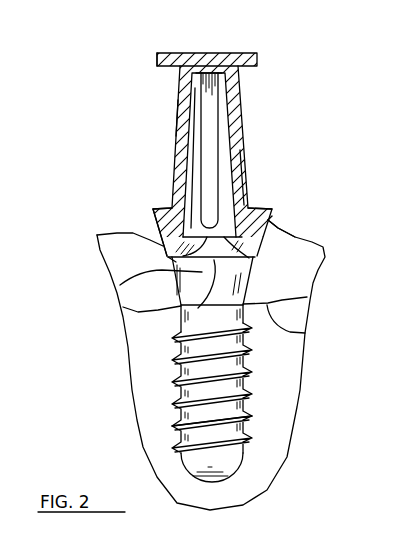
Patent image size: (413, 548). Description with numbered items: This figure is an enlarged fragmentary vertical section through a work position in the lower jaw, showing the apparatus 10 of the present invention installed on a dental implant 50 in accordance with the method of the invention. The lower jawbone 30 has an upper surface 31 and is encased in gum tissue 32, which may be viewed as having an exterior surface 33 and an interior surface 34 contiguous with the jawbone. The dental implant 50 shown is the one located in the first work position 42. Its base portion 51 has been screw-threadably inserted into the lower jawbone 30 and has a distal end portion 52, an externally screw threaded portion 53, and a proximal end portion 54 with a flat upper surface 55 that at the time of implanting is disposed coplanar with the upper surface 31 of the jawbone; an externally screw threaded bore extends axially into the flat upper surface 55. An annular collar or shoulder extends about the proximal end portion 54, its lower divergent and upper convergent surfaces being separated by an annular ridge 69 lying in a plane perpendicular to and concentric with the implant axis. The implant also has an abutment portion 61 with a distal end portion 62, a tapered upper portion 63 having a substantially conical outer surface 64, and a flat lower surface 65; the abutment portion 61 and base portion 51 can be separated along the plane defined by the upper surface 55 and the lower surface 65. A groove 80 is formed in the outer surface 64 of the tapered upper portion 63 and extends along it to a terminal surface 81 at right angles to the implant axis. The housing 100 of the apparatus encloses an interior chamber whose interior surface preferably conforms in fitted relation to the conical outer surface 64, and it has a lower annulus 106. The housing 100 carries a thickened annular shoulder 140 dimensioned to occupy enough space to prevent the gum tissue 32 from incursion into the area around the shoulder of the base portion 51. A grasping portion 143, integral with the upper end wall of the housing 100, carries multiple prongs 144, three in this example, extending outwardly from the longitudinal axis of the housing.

The apparatus 10 is at (257, 118).
The lower jawbone 30 is at (267, 383).
The upper surface 31 is at (282, 303).
The gum tissue 32 is at (295, 275).
The exterior surface 33 is at (285, 232).
The interior surface 34 is at (305, 333).
The first work position 42 is at (273, 180).
The dental implant 50 is at (202, 280).
The base portion 51 is at (182, 393).
The distal end portion 52 is at (217, 482).
The externally screw threaded portion 53 is at (180, 425).
The proximal end portion 54 is at (180, 315).
The flat upper surface 55 is at (262, 206).
The abutment portion 61 is at (225, 163).
The distal end portion 62 is at (120, 285).
The tapered upper portion 63 is at (197, 115).
The conical outer surface 64 is at (228, 205).
The flat lower surface 65 is at (170, 250).
The annular ridge 69 is at (248, 270).
The groove 80 is at (212, 107).
The terminal surface 81 is at (200, 72).
The housing 100 is at (175, 135).
The lower annulus 106 is at (175, 261).
The annular shoulder 140 is at (162, 212).
The grasping portion 143 is at (247, 53).
The prongs 144 is at (172, 54).